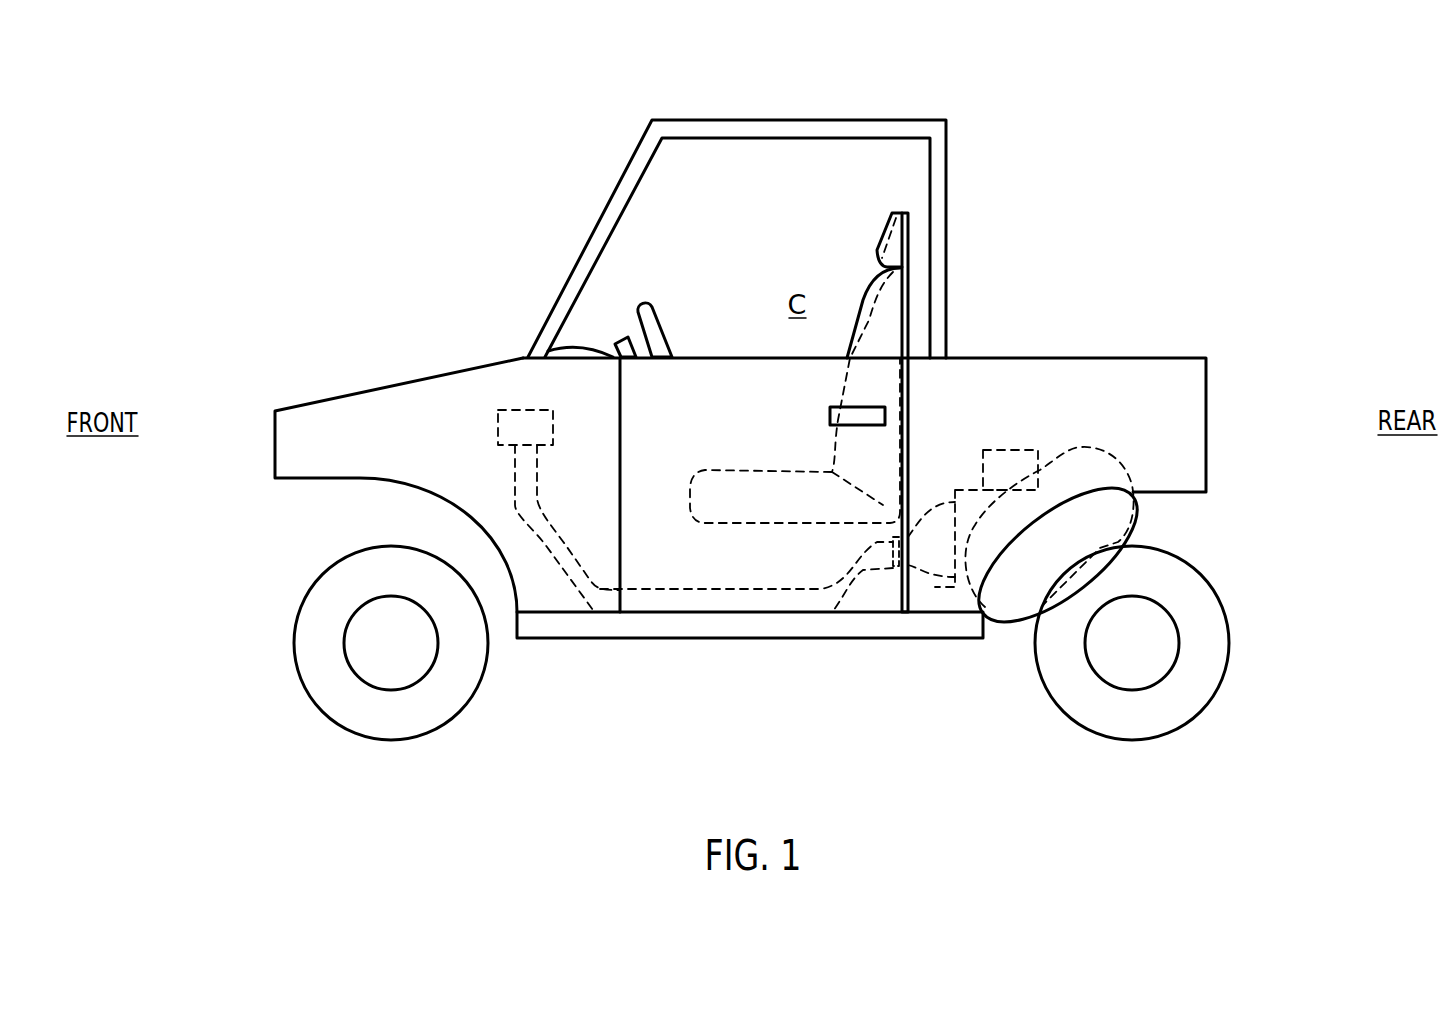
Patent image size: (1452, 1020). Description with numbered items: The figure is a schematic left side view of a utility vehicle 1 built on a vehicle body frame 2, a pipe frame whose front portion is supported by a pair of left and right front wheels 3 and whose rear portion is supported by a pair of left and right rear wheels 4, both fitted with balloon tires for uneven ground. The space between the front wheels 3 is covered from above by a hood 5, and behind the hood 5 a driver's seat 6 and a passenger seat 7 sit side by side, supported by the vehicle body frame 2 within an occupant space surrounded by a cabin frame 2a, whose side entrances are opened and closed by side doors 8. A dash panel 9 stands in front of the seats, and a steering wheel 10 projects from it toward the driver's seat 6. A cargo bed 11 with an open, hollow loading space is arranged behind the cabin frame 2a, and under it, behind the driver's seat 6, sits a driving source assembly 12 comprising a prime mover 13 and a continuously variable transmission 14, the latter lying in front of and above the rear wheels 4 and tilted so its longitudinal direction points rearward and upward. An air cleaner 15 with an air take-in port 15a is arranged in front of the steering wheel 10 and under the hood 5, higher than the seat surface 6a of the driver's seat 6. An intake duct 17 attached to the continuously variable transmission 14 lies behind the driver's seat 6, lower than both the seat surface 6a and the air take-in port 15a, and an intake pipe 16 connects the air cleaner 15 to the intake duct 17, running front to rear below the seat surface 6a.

The utility vehicle 1 is at (443, 163).
The vehicle body frame 2 is at (622, 640).
The cabin frame 2a is at (627, 163).
The front wheels 3 is at (293, 633).
The rear wheels 4 is at (1230, 635).
The hood 5 is at (362, 392).
The driver's seat 6 is at (863, 303).
The seat surface 6a is at (733, 467).
The passenger seat 7 is at (877, 235).
The side doors 8 is at (717, 570).
The dash panel 9 is at (578, 347).
The steering wheel 10 is at (650, 305).
The cargo bed 11 is at (1148, 357).
The driving source assembly 12 is at (1115, 255).
The prime mover 13 is at (1012, 448).
The continuously variable transmission 14 is at (1082, 447).
The air cleaner 15 is at (501, 444).
The air take-in port 15a is at (520, 410).
The intake pipe 16 is at (850, 595).
The intake duct 17 is at (937, 577).